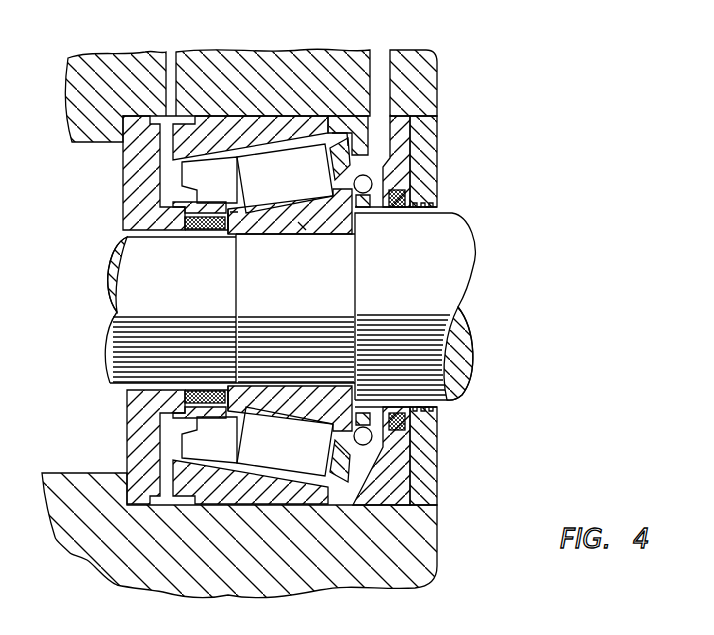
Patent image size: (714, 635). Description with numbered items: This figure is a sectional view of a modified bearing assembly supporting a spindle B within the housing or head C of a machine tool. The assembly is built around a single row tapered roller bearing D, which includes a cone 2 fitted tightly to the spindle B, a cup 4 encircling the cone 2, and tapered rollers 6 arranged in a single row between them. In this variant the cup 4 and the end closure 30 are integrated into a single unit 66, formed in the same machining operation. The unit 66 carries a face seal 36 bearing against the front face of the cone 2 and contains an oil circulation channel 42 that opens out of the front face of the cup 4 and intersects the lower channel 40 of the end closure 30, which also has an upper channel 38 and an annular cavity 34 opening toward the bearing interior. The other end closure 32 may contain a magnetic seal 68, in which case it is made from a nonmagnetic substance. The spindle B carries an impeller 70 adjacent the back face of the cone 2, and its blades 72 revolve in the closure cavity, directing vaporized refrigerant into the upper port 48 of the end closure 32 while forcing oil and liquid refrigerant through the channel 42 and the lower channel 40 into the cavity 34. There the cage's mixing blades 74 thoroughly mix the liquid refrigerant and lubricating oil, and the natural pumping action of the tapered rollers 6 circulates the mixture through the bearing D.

The cone 2 is at (313, 402).
The cup 4 is at (275, 112).
The tapered rollers 6 is at (284, 230).
The end closure 30 is at (140, 156).
The end closure 32 is at (428, 181).
The annular cavity 34 is at (200, 180).
The face seal 36 is at (226, 233).
The upper channel 38 is at (162, 208).
The lower channel 40 is at (160, 437).
The oil circulation channel 42 is at (303, 500).
The upper port 48 is at (383, 136).
The integrated unit 66 is at (127, 457).
The magnetic seal 68 is at (404, 207).
The impeller 70 is at (390, 414).
The blades 72 is at (368, 440).
The mixing blades 74 is at (213, 174).
The spindle B is at (276, 311).
The head C is at (430, 40).
The tapered roller bearing D is at (304, 227).